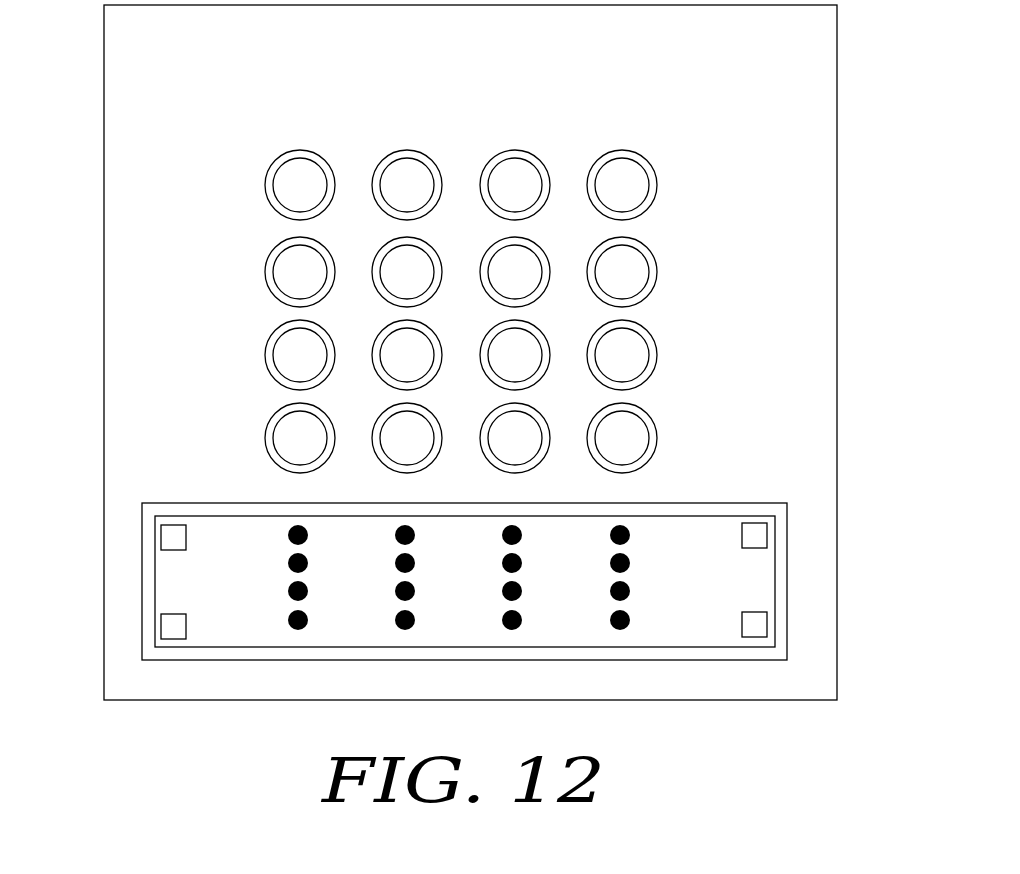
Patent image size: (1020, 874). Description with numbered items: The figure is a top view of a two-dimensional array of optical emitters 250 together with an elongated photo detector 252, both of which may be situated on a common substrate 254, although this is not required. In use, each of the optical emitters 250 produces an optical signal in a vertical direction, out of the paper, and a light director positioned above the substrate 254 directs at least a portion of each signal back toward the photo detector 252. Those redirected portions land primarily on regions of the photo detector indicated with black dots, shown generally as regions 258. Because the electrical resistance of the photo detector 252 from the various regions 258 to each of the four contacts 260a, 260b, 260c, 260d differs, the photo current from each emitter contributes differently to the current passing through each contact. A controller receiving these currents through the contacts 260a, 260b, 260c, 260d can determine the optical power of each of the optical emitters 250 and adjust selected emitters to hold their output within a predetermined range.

The optical emitters 250 is at (469, 376).
The elongated photo detector 252 is at (710, 676).
The common substrate 254 is at (815, 97).
The regions 258 is at (258, 612).
The contact 260a is at (165, 532).
The contact 260b is at (168, 625).
The contact 260c is at (757, 537).
The contact 260d is at (757, 623).